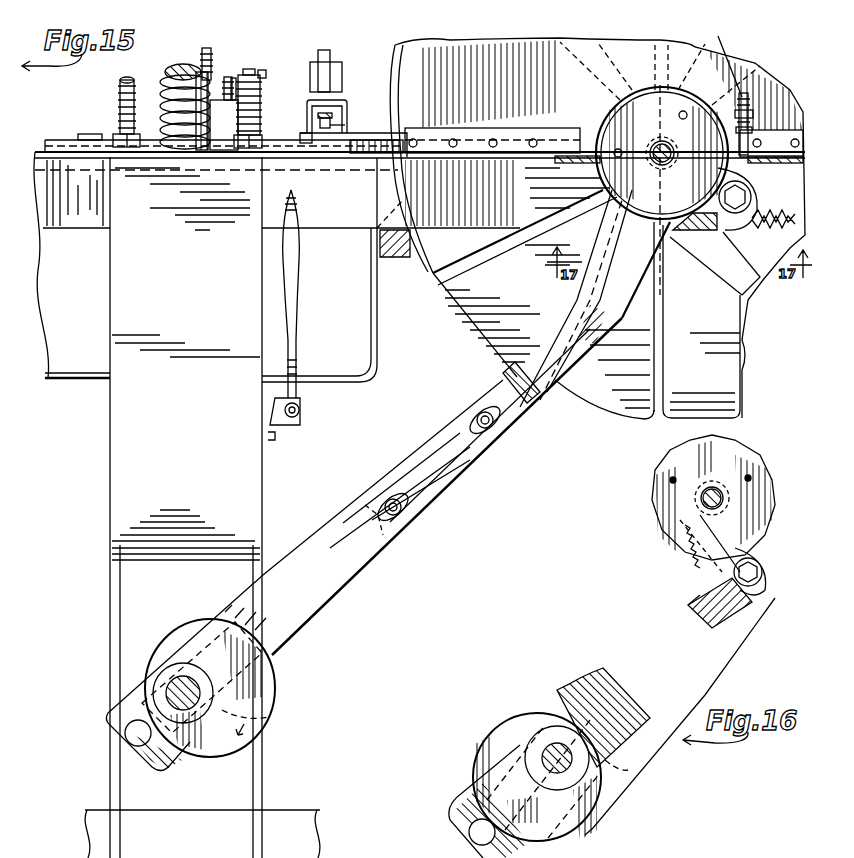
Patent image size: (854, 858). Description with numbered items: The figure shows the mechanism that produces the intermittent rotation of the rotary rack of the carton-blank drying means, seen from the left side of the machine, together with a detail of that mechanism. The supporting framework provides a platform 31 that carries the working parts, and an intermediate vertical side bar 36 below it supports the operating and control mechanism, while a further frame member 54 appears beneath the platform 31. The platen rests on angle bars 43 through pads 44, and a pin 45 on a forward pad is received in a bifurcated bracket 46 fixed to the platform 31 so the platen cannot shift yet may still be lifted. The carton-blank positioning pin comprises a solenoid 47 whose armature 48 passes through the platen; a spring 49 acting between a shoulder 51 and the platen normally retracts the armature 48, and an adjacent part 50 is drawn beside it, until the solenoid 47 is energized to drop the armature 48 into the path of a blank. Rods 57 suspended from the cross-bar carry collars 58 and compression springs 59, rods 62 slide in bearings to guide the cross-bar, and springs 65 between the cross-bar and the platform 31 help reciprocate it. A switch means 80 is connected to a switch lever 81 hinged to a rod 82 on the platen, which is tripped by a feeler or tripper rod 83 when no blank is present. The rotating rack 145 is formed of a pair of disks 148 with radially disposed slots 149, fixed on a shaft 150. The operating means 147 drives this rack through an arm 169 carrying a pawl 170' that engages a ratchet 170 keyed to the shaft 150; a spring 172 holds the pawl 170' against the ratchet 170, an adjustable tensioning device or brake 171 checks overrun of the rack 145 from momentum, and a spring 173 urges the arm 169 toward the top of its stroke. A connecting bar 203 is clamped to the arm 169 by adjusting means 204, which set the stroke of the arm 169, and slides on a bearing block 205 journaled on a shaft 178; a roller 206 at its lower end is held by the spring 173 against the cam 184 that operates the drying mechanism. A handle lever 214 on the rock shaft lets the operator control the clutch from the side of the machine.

In FIG. 15, the platform 31 is at (97, 162).
In FIG. 15, the intermediate vertical side bar 36 is at (135, 435).
In FIG. 15, the angle bar 43 is at (356, 152).
In FIG. 15, the pad 44 is at (88, 134).
In FIG. 15, the pin 45 is at (302, 134).
In FIG. 15, the bifurcated bracket 46 is at (322, 160).
In FIG. 15, the solenoid 47 is at (342, 72).
In FIG. 15, the armature 48 is at (309, 104).
In FIG. 15, the spring 49 is at (332, 121).
In FIG. 15, the nut 50 is at (346, 126).
In FIG. 15, the shoulder 51 is at (331, 113).
In FIG. 15, the leg 54 is at (72, 362).
In FIG. 15, the rod 57 is at (255, 72).
In FIG. 15, the collar 58 is at (248, 140).
In FIG. 15, the compression spring 59 is at (264, 78).
In FIG. 15, the rod 62 is at (190, 66).
In FIG. 15, the spring 65 is at (175, 70).
In FIG. 15, the switch means 80 is at (222, 118).
In FIG. 15, the switch lever 81 is at (236, 80).
In FIG. 15, the rod 82 is at (228, 78).
In FIG. 15, the feeler or tripper rod 83 is at (208, 50).
In FIG. 15, the rotating rack 145 is at (462, 210).
In FIG. 15, the operating means 147 is at (362, 447).
In FIG. 15, the disk 148 is at (470, 340).
In FIG. 15, the radially-disposed slot 149 is at (432, 290).
In FIG. 15, the shaft 150 is at (618, 192).
In FIG. 16, the shaft 150 is at (702, 500).
In FIG. 15, the arm 169 is at (568, 380).
In FIG. 16, the arm 169 is at (700, 620).
In FIG. 15, the ratchet 170 is at (662, 190).
In FIG. 16, the ratchet 170 is at (716, 489).
In FIG. 15, the pawl 170' is at (691, 270).
In FIG. 16, the pawl 170' is at (698, 603).
In FIG. 15, the adjustable tensioning device or brake 171 is at (770, 110).
In FIG. 15, the spring 172 is at (690, 203).
In FIG. 16, the spring 172 is at (690, 540).
In FIG. 15, the spring 173 is at (760, 235).
In FIG. 15, the shaft 178 is at (177, 672).
In FIG. 15, the cam 184 is at (278, 680).
In FIG. 16, the cam 184 is at (532, 712).
In FIG. 15, the connecting bar 203 is at (330, 606).
In FIG. 16, the connecting bar 203 is at (605, 690).
In FIG. 15, the adjusting means 204 is at (490, 430).
In FIG. 15, the bearing block 205 is at (272, 716).
In FIG. 16, the bearing block 205 is at (627, 756).
In FIG. 15, the roller 206 is at (125, 732).
In FIG. 16, the roller 206 is at (480, 830).
In FIG. 15, the handle lever 214 is at (295, 324).